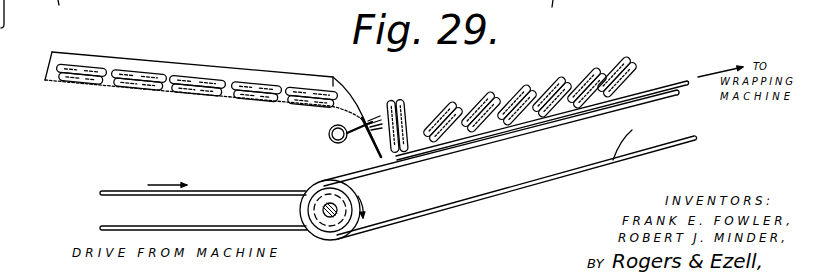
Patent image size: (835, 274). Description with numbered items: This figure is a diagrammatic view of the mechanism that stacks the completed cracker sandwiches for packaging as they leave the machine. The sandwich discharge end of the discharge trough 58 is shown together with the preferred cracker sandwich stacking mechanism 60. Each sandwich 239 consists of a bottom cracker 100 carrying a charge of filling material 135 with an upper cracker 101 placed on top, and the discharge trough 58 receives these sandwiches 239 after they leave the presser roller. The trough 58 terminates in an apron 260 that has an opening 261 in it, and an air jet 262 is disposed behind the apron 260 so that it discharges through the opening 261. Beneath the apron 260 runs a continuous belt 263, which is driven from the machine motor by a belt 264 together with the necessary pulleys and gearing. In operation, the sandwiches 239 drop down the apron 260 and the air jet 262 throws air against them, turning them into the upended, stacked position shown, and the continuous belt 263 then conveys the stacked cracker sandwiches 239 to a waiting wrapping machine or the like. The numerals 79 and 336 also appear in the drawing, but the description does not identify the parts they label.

The discharge trough 58 is at (193, 60).
The cracker sandwich stacking mechanism 60 is at (273, 158).
The machine frame 79 is at (13, 24).
The bottom cracker 100 is at (122, 72).
The upper cracker 101 is at (117, 83).
The charge of filling material 135 is at (257, 80).
The sandwiches 239 is at (315, 82).
The apron 260 is at (372, 155).
The opening 261 is at (368, 122).
The air jet 262 is at (328, 128).
The continuous belt 263 is at (613, 100).
The belt 264 is at (113, 193).
The guide rails 336 is at (316, 16).